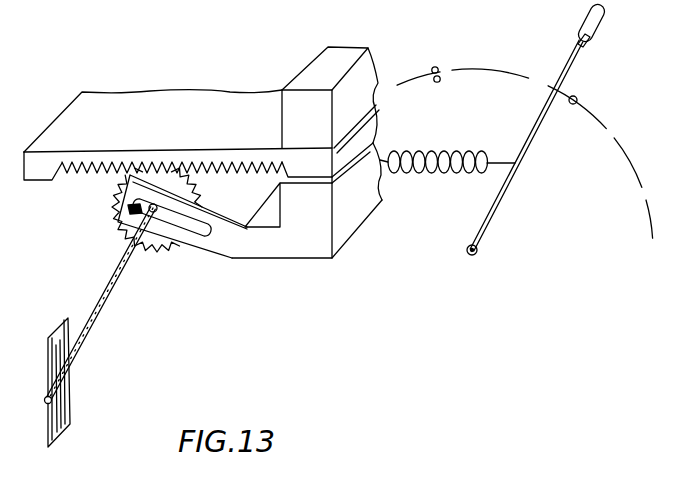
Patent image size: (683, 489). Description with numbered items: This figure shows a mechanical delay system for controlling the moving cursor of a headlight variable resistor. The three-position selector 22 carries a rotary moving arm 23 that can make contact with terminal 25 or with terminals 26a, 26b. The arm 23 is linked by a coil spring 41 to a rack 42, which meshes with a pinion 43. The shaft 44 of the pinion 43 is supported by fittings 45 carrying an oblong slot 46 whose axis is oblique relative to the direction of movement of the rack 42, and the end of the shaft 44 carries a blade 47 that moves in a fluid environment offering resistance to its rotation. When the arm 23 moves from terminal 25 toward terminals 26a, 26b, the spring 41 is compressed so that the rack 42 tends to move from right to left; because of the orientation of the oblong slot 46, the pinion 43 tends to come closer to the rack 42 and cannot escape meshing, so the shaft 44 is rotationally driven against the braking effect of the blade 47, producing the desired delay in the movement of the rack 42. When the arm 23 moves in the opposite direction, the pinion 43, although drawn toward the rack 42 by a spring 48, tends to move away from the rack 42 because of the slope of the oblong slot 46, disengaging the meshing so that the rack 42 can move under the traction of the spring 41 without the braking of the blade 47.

The three-position selector 22 is at (620, 124).
The rotary moving arm 23 is at (497, 210).
The terminal 25 is at (573, 104).
The terminal 26a is at (436, 66).
The terminal 26b is at (434, 79).
The coil spring 41 is at (427, 148).
The rack 42 is at (236, 158).
The pinion 43 is at (154, 241).
The shaft 44 is at (116, 283).
The fittings 45 is at (236, 246).
The oblong slot 46 is at (186, 222).
The blade 47 is at (53, 403).
The spring 48 is at (128, 211).